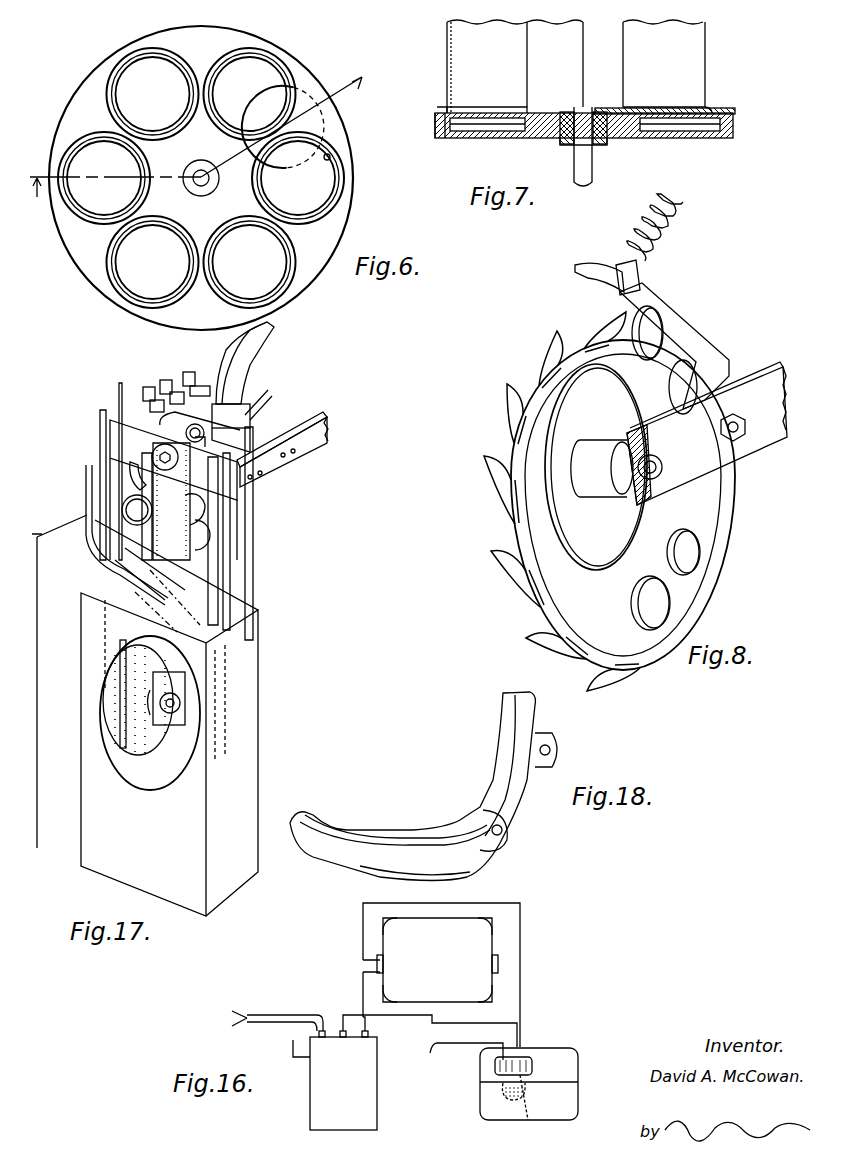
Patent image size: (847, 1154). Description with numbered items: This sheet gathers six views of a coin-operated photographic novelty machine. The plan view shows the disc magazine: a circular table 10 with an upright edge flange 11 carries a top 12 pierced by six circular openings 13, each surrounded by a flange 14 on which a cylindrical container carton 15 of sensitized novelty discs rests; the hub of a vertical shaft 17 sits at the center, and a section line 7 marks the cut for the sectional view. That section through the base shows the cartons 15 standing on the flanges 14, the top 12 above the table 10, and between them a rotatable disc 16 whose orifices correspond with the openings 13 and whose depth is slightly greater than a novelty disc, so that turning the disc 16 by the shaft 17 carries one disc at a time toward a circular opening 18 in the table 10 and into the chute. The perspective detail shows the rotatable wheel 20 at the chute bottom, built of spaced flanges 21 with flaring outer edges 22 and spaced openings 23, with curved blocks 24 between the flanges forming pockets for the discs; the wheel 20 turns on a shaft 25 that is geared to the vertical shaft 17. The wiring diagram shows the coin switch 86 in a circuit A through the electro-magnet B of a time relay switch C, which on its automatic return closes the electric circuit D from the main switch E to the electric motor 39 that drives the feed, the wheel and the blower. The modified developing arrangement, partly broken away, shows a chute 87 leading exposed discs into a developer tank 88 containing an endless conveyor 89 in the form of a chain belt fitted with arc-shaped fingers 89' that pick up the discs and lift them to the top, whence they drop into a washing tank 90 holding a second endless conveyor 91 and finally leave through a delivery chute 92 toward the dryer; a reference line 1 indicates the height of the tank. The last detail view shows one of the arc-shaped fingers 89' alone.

In FIG. 17, the box wall 1 is at (59, 692).
In FIG. 6, the section line 7— 7 is at (201, 148).
In FIG. 7, the circular table 10 is at (470, 136).
In FIG. 7, the upright edge flange 11 is at (437, 128).
In FIG. 7, the top 12 is at (722, 112).
In FIG. 6, the circular openings 13 is at (331, 157).
In FIG. 7, the circular openings 13 is at (460, 110).
In FIG. 6, the flange 14 is at (336, 178).
In FIG. 7, the flange 14 is at (450, 110).
In FIG. 7, the container cartons 15 is at (698, 53).
In FIG. 6, the rotatable disc 16 is at (277, 70).
In FIG. 7, the rotatable disc 16 is at (630, 133).
In FIG. 6, the vertical shaft 17 is at (208, 183).
In FIG. 7, the vertical shaft 17 is at (593, 172).
In FIG. 7, the circular opening 18 is at (706, 133).
In FIG. 8, the rotatable wheel 20 is at (548, 365).
In FIG. 8, the spaced flanges 21 is at (600, 630).
In FIG. 8, the flaring outer edges 22 is at (598, 266).
In FIG. 8, the spaced openings 23 is at (657, 607).
In FIG. 8, the curved blocks 24 is at (512, 420).
In FIG. 8, the shaft 25 is at (662, 468).
In FIG. 16, the electric motor 39 is at (437, 960).
In FIG. 16, the switch 86 is at (432, 1027).
In FIG. 17, the chute 87 is at (263, 343).
In FIG. 17, the developer tank 88 is at (240, 568).
In FIG. 17, the endless conveyor 89 is at (229, 448).
In FIG. 17, the arc-shaped fingers 89' is at (175, 610).
In FIG. 18, the arc-shaped fingers 89' is at (423, 786).
In FIG. 17, the washing tank 90 is at (207, 587).
In FIG. 17, the endless conveyor 91 is at (120, 560).
In FIG. 17, the delivery chute 92 is at (147, 620).
In FIG. 16, the circuit A is at (450, 1050).
In FIG. 16, the electro-magnet B is at (527, 1120).
In FIG. 16, the time relay switch C is at (578, 1090).
In FIG. 16, the electric circuit D is at (520, 968).
In FIG. 16, the main switch E is at (374, 1070).